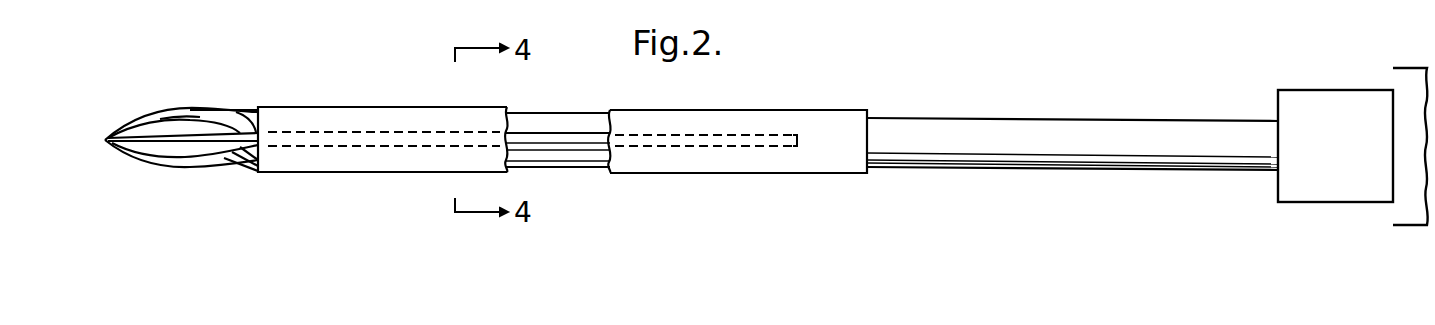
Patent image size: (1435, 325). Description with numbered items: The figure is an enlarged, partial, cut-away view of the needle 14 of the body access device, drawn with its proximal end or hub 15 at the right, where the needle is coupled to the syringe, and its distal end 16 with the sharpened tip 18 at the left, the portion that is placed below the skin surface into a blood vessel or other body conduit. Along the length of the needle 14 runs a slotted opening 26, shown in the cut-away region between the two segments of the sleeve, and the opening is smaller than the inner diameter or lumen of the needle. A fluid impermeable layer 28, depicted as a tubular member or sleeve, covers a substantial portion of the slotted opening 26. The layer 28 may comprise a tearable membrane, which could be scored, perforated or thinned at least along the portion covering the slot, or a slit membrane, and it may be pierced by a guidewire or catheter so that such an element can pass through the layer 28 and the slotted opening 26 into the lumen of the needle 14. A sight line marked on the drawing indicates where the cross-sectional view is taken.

The needle 14 is at (1022, 118).
The hub 15 is at (1290, 88).
The distal end 16 is at (230, 106).
The sharpened tip 18 is at (100, 140).
The slotted opening 26 is at (582, 148).
The fluid impermeable layer 28 is at (348, 106).